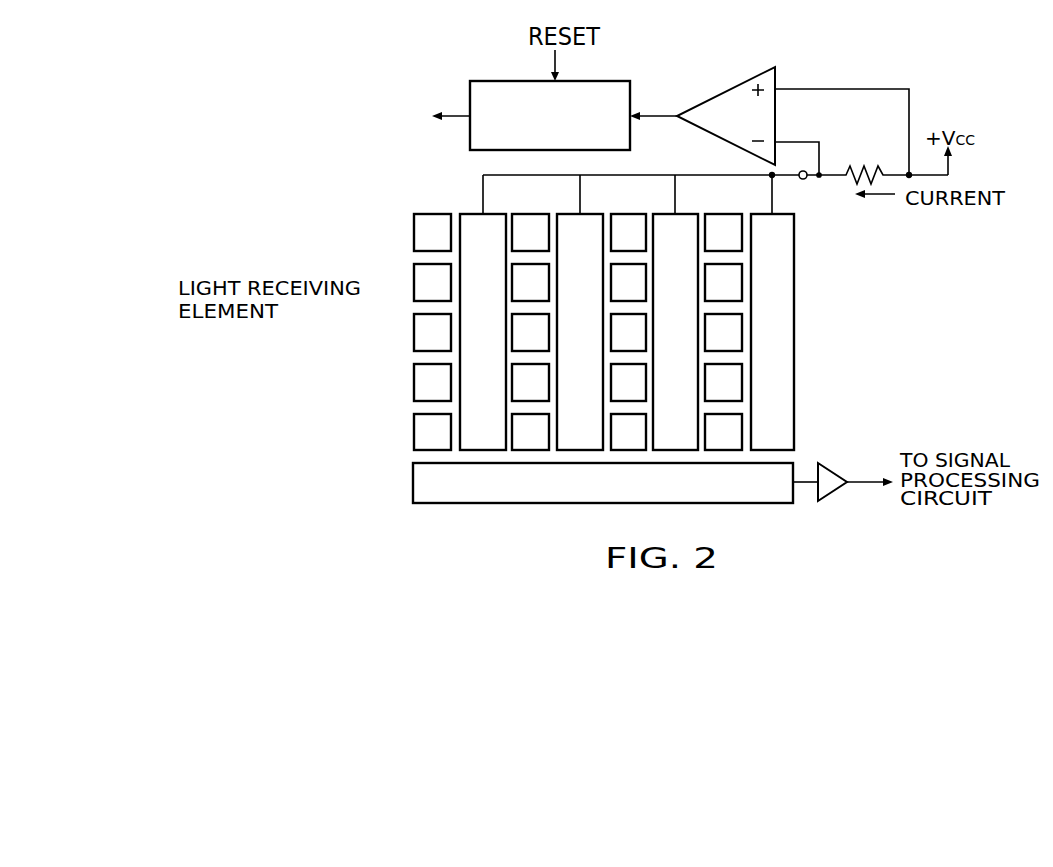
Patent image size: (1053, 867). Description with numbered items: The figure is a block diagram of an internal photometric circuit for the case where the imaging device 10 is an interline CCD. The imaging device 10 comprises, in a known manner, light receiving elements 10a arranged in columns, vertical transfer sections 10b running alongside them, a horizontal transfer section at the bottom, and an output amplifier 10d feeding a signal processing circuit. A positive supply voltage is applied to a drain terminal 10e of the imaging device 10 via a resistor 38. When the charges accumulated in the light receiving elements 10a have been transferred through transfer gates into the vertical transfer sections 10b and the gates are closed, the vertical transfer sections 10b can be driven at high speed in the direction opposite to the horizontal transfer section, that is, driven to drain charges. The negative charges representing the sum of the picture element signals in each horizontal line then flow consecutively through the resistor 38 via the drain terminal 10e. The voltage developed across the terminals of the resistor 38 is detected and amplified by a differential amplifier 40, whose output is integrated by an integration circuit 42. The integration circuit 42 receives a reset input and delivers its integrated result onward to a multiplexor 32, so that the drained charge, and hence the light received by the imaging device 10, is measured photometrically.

The imaging device 10 is at (629, 337).
The light receiving elements 10a is at (414, 327).
The vertical transfer sections 10b is at (795, 292).
The amplifier 10d is at (838, 470).
The drain terminal 10e is at (805, 180).
The multiplexor 32 is at (345, 118).
The resistor 38 is at (865, 170).
The differential amplifier 40 is at (728, 88).
The integration circuit 42 is at (625, 76).